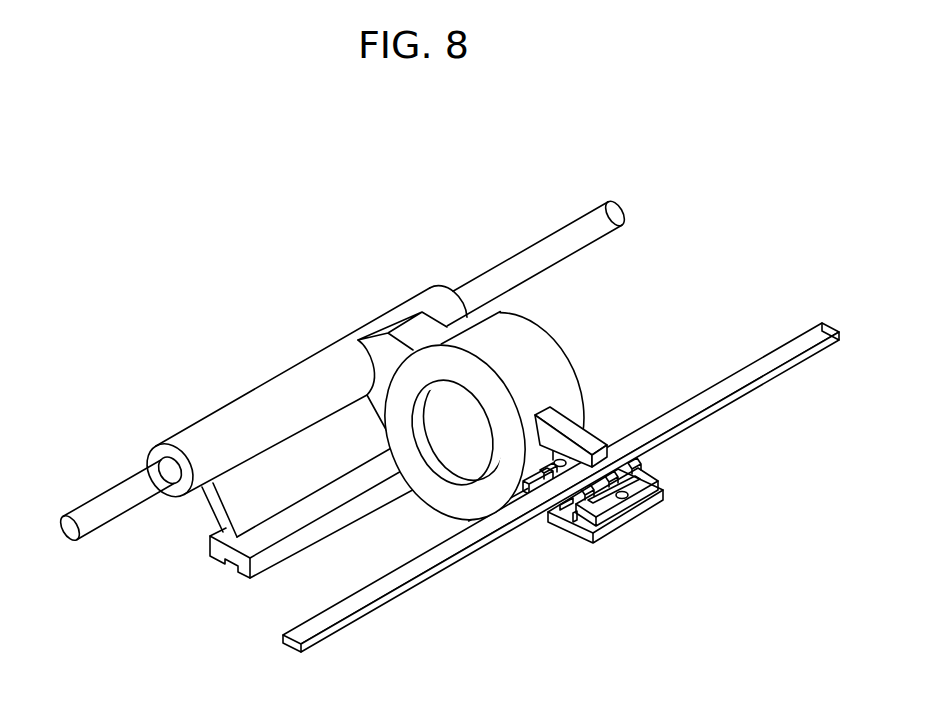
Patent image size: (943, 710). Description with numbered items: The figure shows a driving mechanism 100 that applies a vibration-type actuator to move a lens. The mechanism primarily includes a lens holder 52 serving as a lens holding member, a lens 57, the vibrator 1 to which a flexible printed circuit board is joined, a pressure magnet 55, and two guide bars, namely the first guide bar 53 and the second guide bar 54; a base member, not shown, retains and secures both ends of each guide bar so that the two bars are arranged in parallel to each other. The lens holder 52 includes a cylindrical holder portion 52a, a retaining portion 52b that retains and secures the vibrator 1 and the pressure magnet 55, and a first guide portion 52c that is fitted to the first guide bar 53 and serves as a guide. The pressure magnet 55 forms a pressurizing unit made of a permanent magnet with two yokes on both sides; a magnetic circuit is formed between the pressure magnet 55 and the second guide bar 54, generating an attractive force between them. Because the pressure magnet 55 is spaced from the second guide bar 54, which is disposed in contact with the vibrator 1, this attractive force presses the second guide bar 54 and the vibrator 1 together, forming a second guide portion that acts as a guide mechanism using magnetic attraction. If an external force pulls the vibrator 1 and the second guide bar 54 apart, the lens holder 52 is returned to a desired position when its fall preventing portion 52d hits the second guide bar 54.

The driving mechanism 100 is at (52, 688).
The vibrator 1 is at (640, 467).
The lens holder 52 is at (479, 414).
The cylindrical holder portion 52a is at (507, 330).
The retaining portion 52b is at (579, 532).
The first guide portion 52c is at (293, 383).
The fall preventing portion 52d is at (578, 438).
The first guide bar 53 is at (545, 250).
The second guide bar 54 is at (760, 367).
The pressure magnet 55 is at (630, 506).
The lens 57 is at (458, 453).